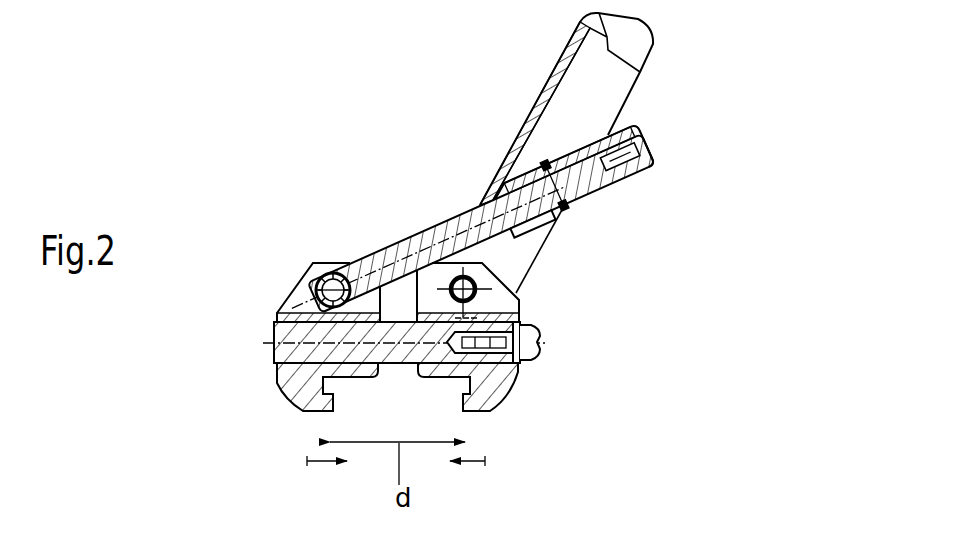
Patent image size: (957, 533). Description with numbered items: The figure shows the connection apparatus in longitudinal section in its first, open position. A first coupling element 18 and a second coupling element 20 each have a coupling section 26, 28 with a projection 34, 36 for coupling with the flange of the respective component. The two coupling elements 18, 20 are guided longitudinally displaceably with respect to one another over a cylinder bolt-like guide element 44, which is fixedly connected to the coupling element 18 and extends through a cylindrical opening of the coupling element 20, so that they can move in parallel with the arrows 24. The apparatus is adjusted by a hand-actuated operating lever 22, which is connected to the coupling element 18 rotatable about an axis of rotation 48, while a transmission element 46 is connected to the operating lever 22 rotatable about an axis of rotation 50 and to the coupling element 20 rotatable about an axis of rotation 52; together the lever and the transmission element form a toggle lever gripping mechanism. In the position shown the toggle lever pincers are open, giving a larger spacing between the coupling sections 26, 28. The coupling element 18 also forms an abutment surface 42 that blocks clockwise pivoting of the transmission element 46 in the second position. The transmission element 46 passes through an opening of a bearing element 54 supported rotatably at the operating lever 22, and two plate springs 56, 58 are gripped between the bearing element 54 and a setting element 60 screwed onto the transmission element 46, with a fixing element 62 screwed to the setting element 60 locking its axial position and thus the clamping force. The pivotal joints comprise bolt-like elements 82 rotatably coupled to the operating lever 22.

The first coupling element 18 is at (515, 294).
The second coupling element 20 is at (293, 307).
The operating lever 22 is at (640, 52).
The arrows 24 is at (307, 461).
The coupling section 26 is at (497, 380).
The coupling section 28 is at (290, 382).
The projection 34 is at (497, 406).
The projection 36 is at (308, 408).
The abutment surface 42 is at (425, 298).
The guide element 44 is at (280, 337).
The transmission element 46 is at (385, 250).
The axis of rotation 48 is at (477, 292).
The axis of rotation 50 is at (552, 232).
The axis of rotation 52 is at (308, 275).
The bearing element 54 is at (535, 174).
The spring element 56 is at (568, 212).
The spring element 58 is at (568, 209).
The setting element 60 is at (650, 160).
The fixing element 62 is at (650, 168).
The bolt-like element 82 is at (462, 275).